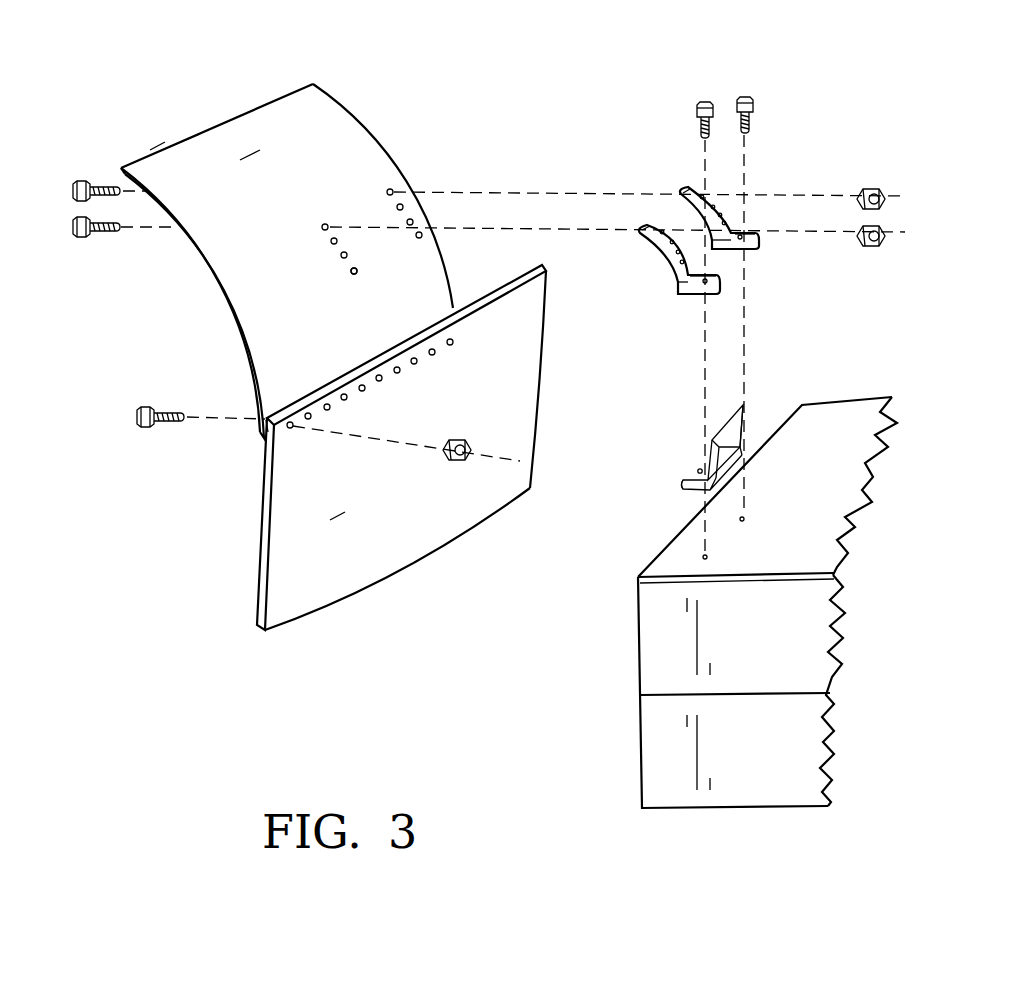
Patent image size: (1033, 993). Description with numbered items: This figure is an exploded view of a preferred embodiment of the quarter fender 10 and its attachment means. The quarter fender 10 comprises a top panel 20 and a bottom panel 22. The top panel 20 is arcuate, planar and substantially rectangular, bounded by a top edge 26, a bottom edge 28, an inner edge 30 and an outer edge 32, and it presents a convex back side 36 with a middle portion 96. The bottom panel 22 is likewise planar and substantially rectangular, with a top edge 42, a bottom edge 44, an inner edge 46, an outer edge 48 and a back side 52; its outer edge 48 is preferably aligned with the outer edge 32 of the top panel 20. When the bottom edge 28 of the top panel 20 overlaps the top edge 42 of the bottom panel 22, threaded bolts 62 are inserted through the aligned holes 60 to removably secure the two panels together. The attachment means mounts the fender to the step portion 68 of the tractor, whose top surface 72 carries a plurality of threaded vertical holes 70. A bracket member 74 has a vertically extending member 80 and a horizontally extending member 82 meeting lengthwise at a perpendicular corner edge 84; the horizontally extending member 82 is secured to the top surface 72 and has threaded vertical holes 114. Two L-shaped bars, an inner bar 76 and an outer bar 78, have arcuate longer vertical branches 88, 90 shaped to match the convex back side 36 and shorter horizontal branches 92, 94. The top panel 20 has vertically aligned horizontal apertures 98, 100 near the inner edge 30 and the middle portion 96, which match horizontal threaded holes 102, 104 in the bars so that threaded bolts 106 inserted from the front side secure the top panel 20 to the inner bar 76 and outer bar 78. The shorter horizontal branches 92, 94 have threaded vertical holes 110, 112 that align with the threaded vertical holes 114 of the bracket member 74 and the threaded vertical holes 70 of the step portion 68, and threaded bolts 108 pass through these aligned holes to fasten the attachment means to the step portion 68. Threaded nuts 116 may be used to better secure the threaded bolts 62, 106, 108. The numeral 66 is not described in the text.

The quarter fender 10 is at (152, 111).
The top panel 20 is at (282, 233).
The bottom panel 22 is at (386, 447).
The top edge 26 is at (222, 122).
The bottom edge 28 is at (257, 440).
The inner edge 30 is at (364, 117).
The outer edge 32 is at (200, 254).
The convex back side 36 is at (246, 181).
The top edge 42 is at (471, 302).
The bottom edge 44 is at (452, 549).
The inner edge 46 is at (542, 439).
The outer edge 48 is at (262, 518).
The back side 52 is at (345, 492).
The holes 60 is at (453, 343).
The threaded bolts 62 is at (134, 418).
The cabinet 66 is at (722, 592).
The step portion 68 is at (750, 790).
The threaded vertical holes 70 is at (745, 521).
The top surface 72 is at (793, 505).
The bracket member 74 is at (735, 433).
The inner bar 76 is at (720, 191).
The outer bar 78 is at (697, 295).
The vertically extending member 80 is at (748, 410).
The horizontally extending member 82 is at (682, 497).
The corner edge 84 is at (760, 450).
The longer vertical branch 88 is at (693, 185).
The longer vertical branch 90 is at (658, 240).
The shorter horizontal branch 92 is at (750, 250).
The shorter horizontal branch 94 is at (690, 297).
The middle portion 96 is at (306, 195).
The horizontal apertures 98 is at (419, 238).
The horizontal apertures 100 is at (354, 274).
The horizontal threaded holes 102 is at (741, 234).
The horizontal threaded holes 104 is at (675, 266).
The threaded bolts 106 is at (68, 212).
The threaded bolts 108 is at (745, 96).
The threaded vertical hole 110 is at (758, 232).
The threaded vertical hole 112 is at (722, 285).
The threaded vertical holes 114 is at (697, 471).
The threaded nuts 116 is at (462, 465).